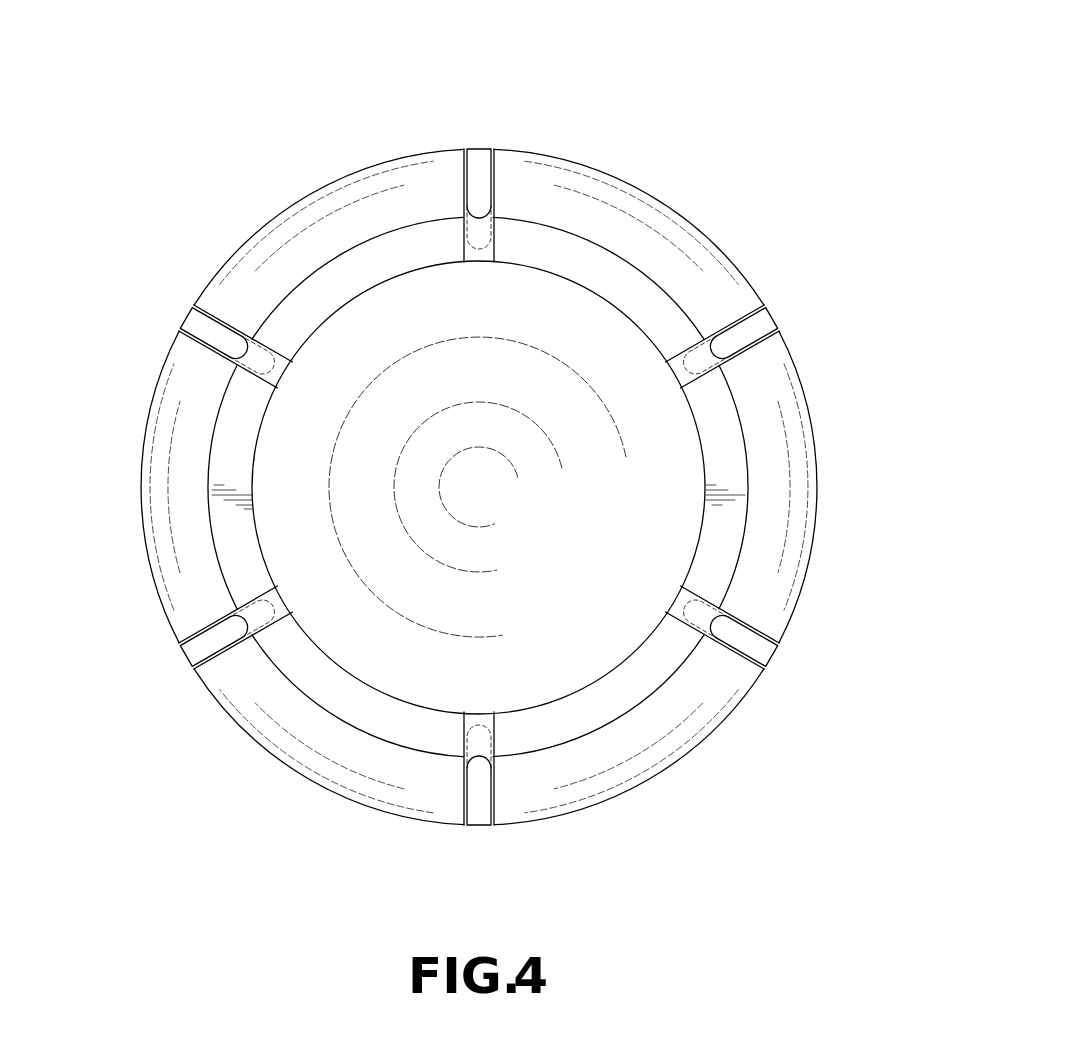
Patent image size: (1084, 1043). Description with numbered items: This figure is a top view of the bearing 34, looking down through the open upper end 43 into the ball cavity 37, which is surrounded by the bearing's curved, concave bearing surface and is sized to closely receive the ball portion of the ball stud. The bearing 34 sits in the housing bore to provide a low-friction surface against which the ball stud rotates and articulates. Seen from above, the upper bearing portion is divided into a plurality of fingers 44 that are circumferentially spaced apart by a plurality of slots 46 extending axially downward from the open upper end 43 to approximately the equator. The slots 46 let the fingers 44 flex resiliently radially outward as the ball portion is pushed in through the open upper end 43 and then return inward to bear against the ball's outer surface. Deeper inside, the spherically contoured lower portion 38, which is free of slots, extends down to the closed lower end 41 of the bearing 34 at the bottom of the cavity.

The bearing 34 is at (813, 400).
The ball cavity 37 is at (550, 320).
The lower portion 38 is at (308, 390).
The closed lower end 41 is at (465, 559).
The open upper end 43 is at (670, 313).
The fingers 44 is at (537, 149).
The slots 46 is at (474, 175).